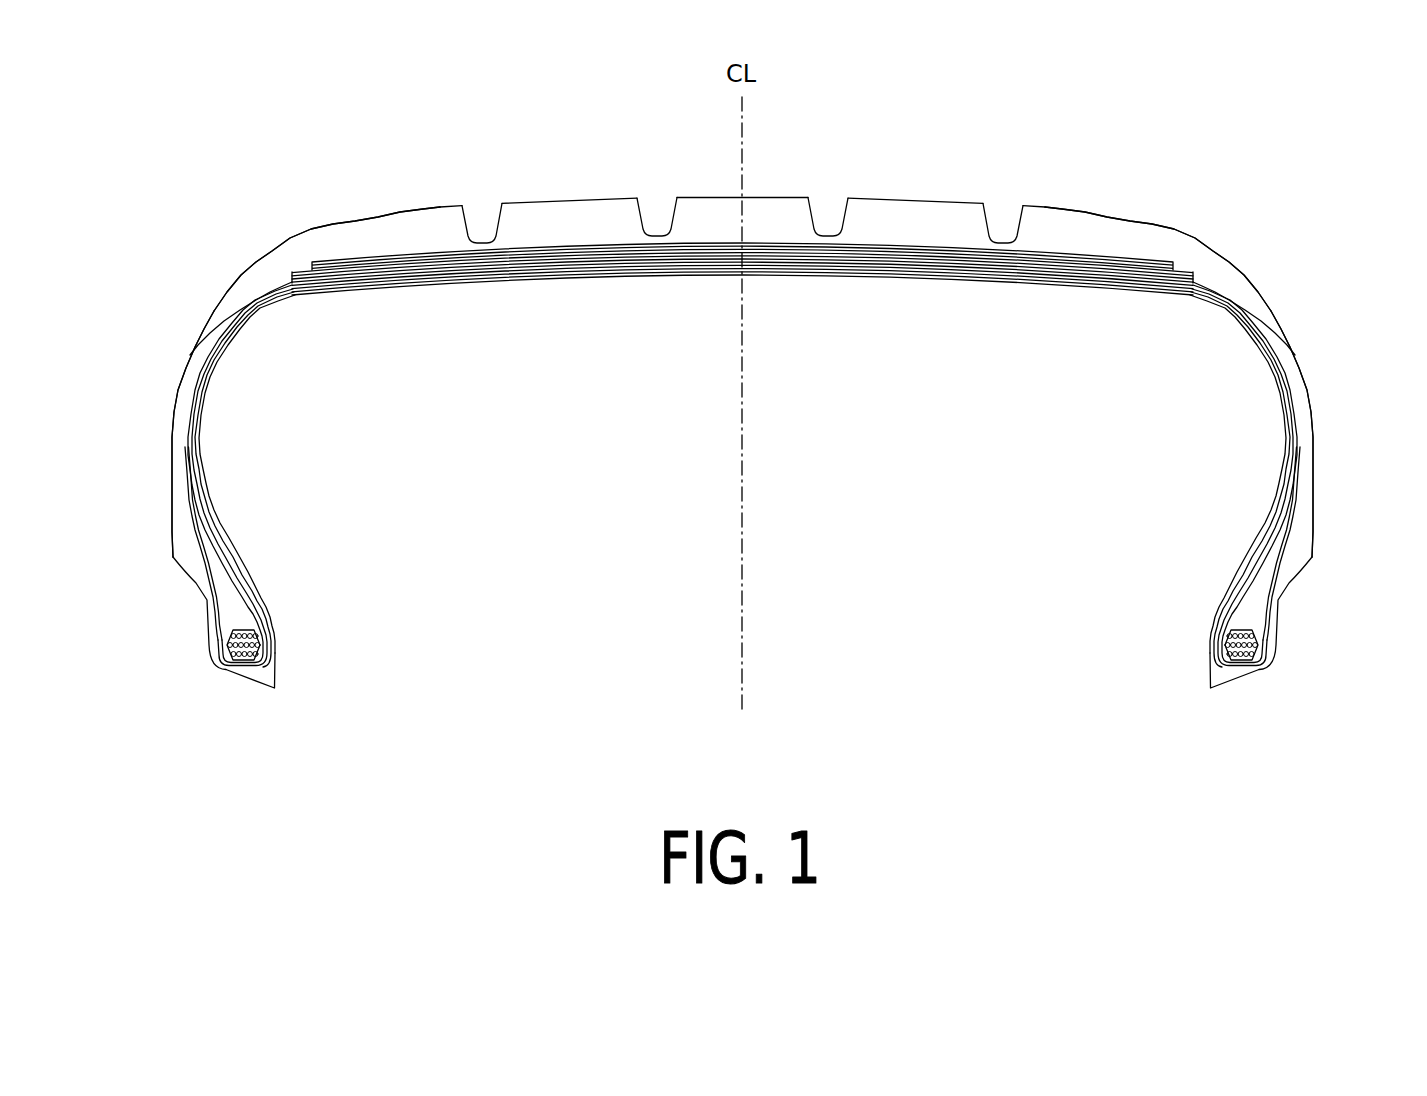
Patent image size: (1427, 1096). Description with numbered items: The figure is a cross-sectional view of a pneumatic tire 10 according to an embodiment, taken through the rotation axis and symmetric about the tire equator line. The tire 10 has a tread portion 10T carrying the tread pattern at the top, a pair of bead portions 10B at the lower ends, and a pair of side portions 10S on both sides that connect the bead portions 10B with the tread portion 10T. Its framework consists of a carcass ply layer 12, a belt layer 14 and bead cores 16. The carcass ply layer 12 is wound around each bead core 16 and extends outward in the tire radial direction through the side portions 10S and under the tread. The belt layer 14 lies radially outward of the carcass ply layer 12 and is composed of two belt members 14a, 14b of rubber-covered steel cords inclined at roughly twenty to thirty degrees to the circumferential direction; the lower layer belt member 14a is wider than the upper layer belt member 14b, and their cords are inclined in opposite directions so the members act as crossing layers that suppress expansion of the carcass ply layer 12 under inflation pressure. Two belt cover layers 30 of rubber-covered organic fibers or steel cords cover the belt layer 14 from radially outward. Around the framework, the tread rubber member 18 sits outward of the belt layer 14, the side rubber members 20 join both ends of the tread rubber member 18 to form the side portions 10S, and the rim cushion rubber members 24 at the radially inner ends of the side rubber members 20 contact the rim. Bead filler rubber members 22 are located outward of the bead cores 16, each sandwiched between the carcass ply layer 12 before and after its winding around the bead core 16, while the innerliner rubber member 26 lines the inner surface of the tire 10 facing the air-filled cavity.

The tire 10 is at (1170, 146).
The tread portion 10T is at (912, 181).
The side portions 10S is at (164, 430).
The bead portions 10B is at (299, 669).
The carcass ply layer 12 is at (249, 330).
The belt layer 14 is at (630, 358).
The lower layer belt member 14a is at (572, 262).
The upper layer belt member 14b is at (593, 252).
The bead cores 16 is at (227, 668).
The tread rubber member 18 is at (1151, 247).
The side rubber members 20 is at (200, 352).
The bead filler rubber members 22 is at (228, 588).
The rim cushion rubber members 24 is at (203, 600).
The innerliner rubber member 26 is at (477, 280).
The belt cover layers 30 is at (437, 253).